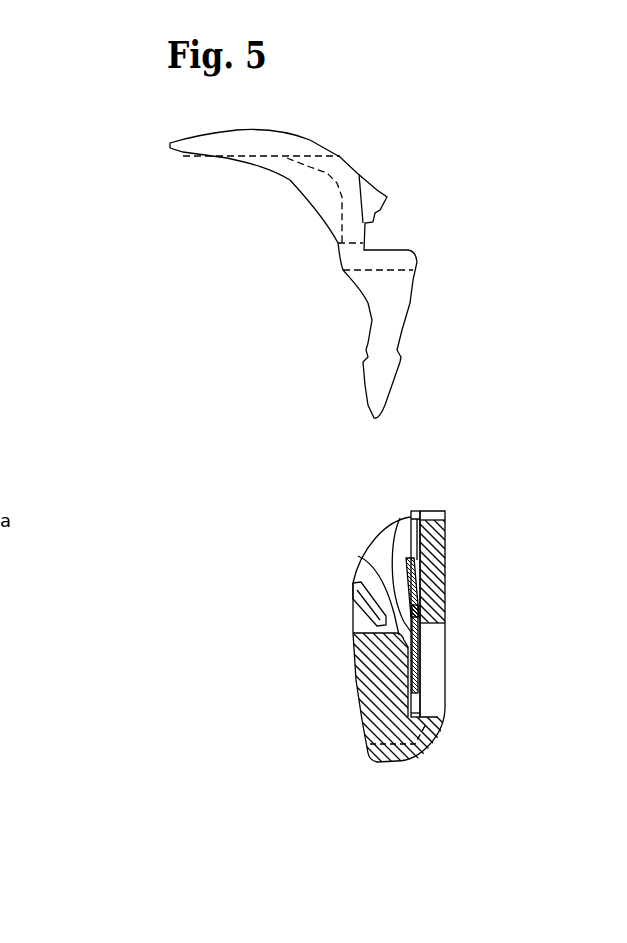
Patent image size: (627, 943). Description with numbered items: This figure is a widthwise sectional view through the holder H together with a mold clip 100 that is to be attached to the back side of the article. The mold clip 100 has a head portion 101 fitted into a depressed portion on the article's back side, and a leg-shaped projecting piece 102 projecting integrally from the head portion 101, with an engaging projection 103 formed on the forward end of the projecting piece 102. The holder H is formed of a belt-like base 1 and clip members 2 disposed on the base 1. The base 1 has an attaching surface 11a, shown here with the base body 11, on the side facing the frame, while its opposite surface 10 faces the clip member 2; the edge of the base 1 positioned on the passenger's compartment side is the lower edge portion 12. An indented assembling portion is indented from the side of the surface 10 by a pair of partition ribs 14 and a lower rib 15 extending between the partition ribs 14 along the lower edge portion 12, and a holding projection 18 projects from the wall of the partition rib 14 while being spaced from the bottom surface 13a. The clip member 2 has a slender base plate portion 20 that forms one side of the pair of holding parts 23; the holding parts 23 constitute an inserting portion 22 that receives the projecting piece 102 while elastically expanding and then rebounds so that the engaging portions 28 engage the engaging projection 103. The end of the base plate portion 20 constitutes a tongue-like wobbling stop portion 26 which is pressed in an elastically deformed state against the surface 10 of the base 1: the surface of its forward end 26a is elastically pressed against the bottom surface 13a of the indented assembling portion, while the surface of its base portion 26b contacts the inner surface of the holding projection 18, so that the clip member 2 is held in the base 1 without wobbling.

The mold clip 100 is at (403, 262).
The head portion 101 is at (277, 147).
The projecting piece 102 is at (387, 317).
The engaging projection 103 is at (365, 375).
The base 1 is at (443, 603).
The clip member 2 is at (352, 598).
The surface 10 is at (447, 578).
The panel body 11 is at (469, 571).
The attaching surface 11a is at (447, 562).
The lower edge portion 12 is at (422, 733).
The bottom surface 13a is at (444, 623).
The partition rib 14 is at (380, 543).
The lower rib 15 is at (398, 761).
The holding projection 18 is at (385, 692).
The base plate portion 20 is at (392, 530).
The inserting portion 22 is at (378, 566).
The holding part 23 is at (378, 608).
The wobbling stop portion 26 is at (505, 629).
The forward end 26a is at (447, 550).
The base portion 26b is at (419, 667).
The engaging portion 28 is at (368, 632).
The holder H is at (463, 522).